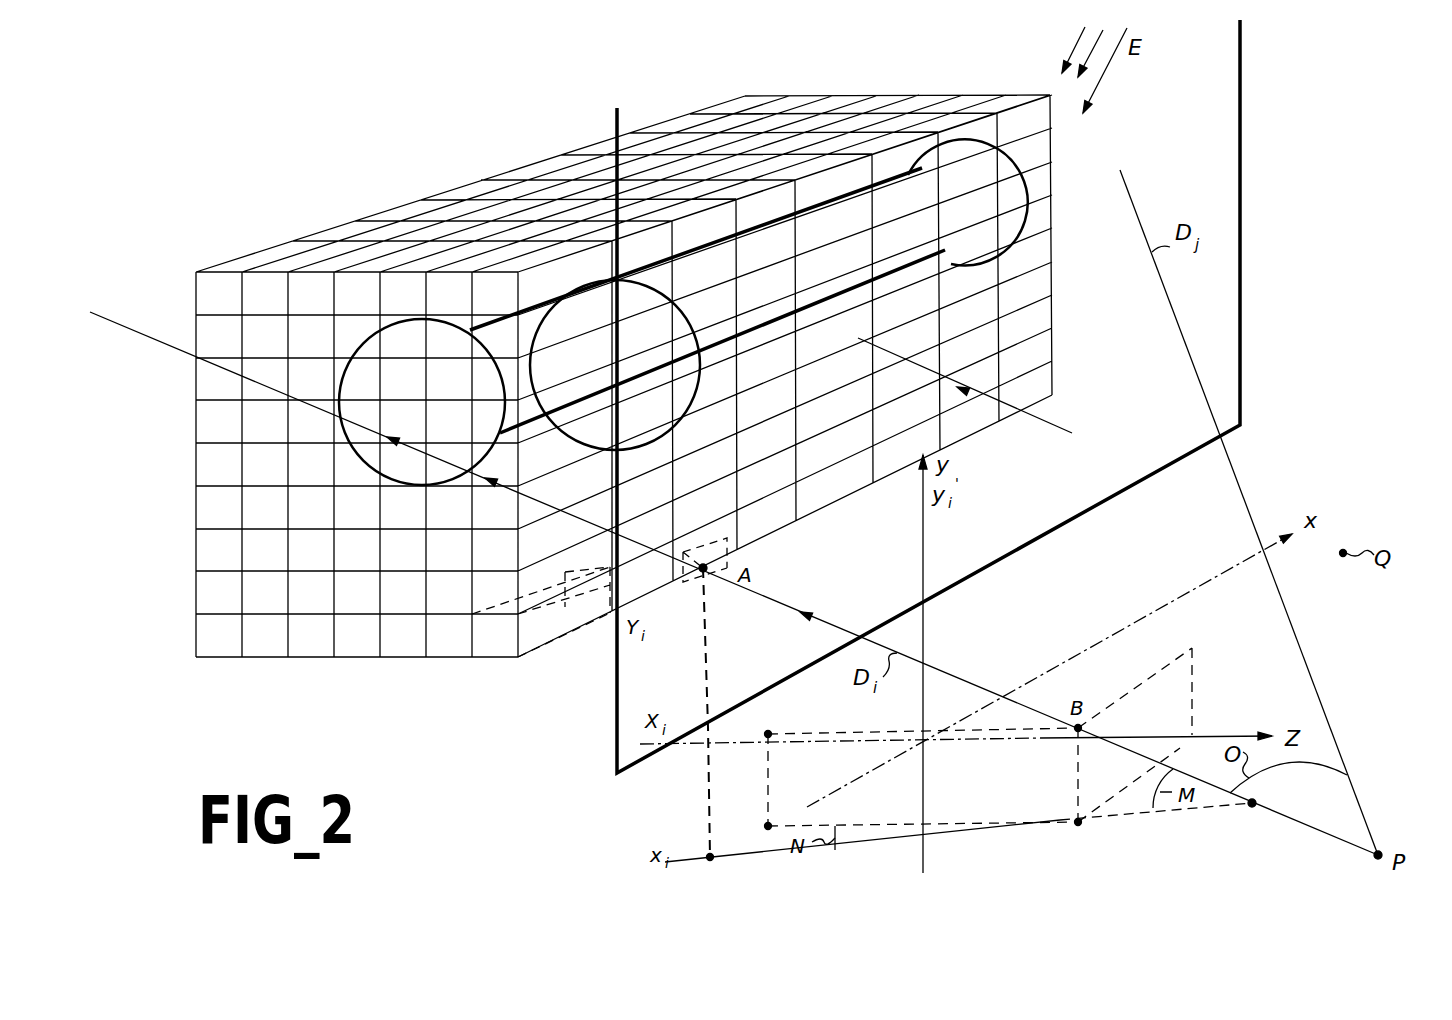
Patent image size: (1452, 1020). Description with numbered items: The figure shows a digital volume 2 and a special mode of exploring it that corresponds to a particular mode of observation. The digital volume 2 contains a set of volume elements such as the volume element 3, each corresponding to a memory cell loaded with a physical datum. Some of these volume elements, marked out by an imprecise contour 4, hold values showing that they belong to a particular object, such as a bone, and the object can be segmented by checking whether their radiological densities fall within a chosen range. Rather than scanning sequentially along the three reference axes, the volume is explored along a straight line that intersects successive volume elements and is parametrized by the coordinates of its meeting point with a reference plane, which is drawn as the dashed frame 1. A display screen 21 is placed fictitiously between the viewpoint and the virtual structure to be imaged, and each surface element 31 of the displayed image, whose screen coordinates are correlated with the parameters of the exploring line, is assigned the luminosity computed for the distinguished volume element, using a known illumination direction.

The detector plane 1 is at (983, 737).
The digital volume 2 is at (139, 418).
The volume element 3 is at (548, 620).
The contour 4 is at (1020, 162).
The display screen 21 is at (612, 740).
The surface element 31 is at (727, 538).